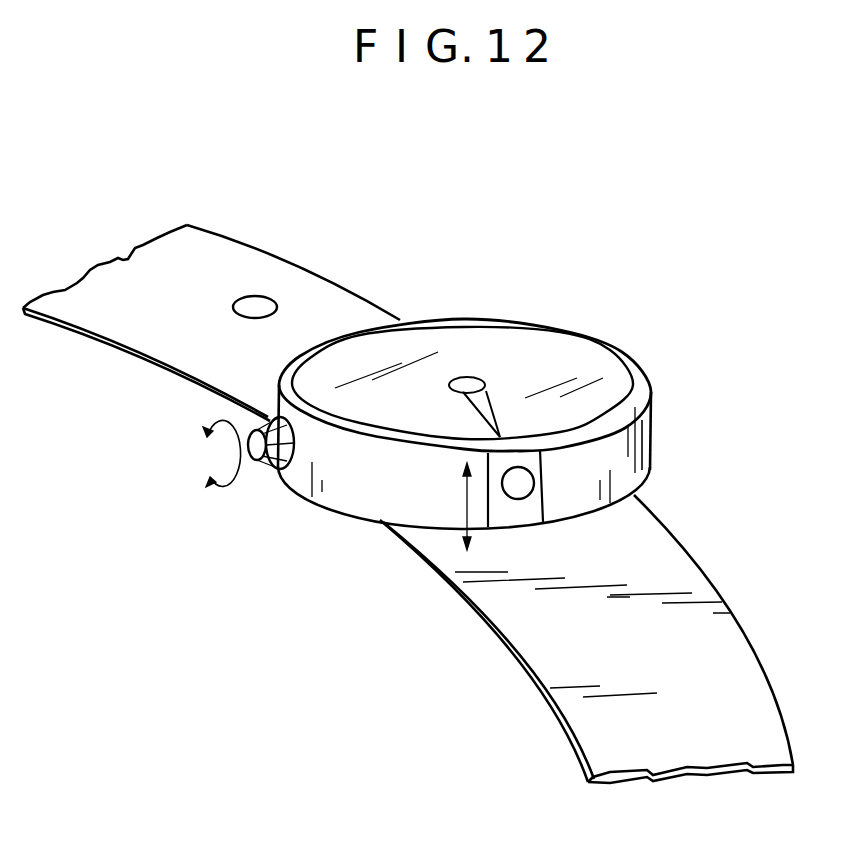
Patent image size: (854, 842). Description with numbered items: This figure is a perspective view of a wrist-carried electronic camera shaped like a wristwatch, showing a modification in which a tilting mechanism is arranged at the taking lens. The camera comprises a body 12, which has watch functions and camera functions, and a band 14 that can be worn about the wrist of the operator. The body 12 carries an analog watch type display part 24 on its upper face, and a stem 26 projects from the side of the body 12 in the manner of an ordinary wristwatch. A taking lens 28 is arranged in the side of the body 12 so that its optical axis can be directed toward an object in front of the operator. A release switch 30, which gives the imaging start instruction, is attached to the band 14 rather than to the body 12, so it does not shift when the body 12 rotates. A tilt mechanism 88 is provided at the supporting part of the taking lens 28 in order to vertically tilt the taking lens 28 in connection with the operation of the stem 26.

The body 12 is at (352, 500).
The band 14 is at (573, 711).
The display part 24 is at (582, 355).
The stem 26 is at (251, 460).
The taking lens 28 is at (520, 488).
The release switch 30 is at (268, 297).
The tilt mechanism 88 is at (540, 482).